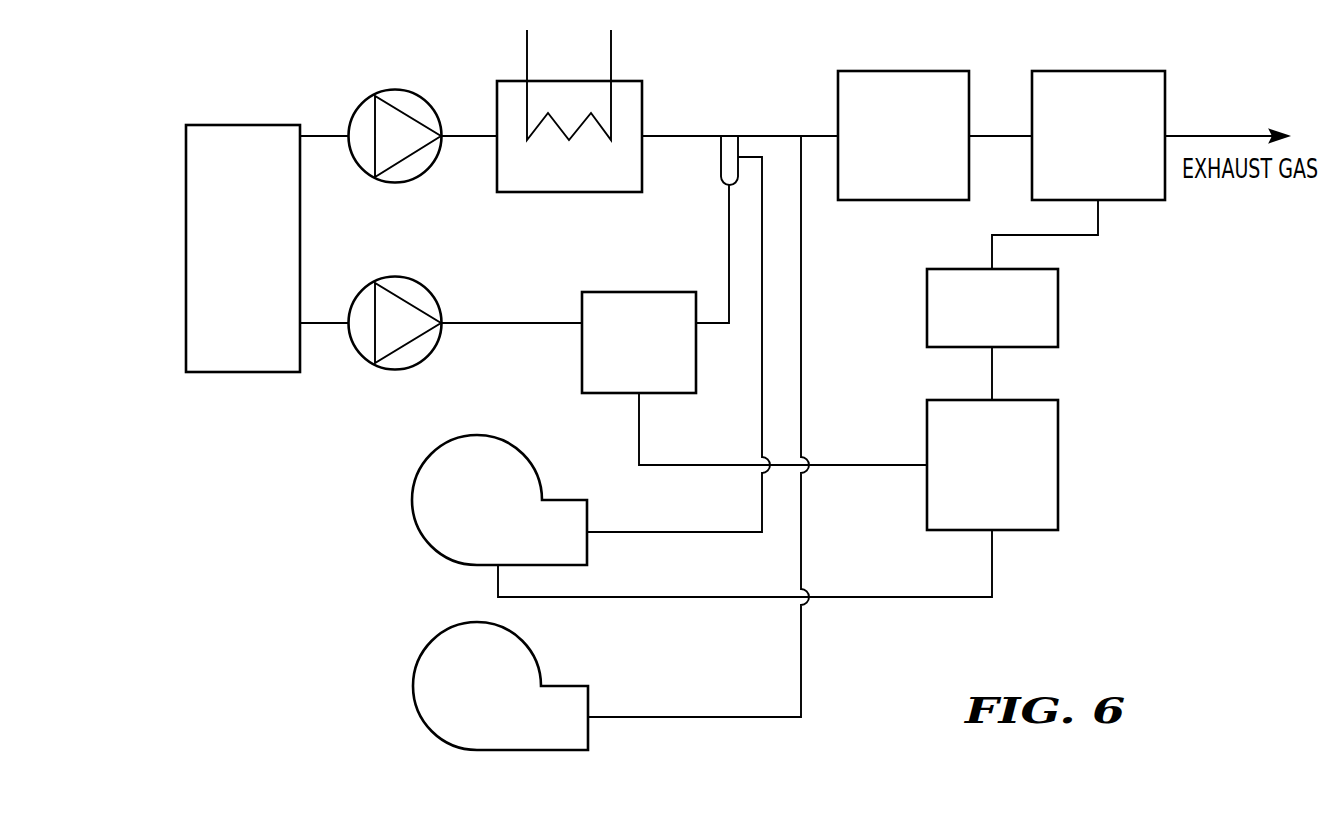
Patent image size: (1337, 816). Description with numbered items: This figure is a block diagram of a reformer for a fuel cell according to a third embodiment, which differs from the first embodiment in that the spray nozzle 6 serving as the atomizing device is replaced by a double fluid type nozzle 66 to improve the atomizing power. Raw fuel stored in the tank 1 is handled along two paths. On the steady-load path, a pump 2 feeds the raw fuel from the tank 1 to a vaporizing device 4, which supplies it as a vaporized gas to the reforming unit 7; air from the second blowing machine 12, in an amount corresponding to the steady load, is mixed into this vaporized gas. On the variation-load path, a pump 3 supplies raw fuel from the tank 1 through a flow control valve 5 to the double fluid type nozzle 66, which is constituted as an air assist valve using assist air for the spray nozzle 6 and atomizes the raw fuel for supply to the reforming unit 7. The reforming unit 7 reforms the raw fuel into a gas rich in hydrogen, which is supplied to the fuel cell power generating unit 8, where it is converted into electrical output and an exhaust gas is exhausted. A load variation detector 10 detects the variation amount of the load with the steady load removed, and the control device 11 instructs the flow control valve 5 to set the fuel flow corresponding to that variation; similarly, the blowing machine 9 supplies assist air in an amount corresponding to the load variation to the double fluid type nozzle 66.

The tank 1 is at (243, 248).
The pump 2 is at (399, 142).
The pump 3 is at (400, 329).
The vaporizing device 4 is at (569, 111).
The flow control valve 5 is at (639, 342).
The spray nozzle 6 is at (730, 124).
The double fluid type nozzle 66 is at (729, 161).
The reforming unit 7 is at (903, 135).
The fuel cell power generating unit 8 is at (1098, 135).
The blowing machine 9 is at (499, 500).
The load variation detector 10 is at (992, 308).
The control device 11 is at (992, 465).
The second blowing machine 12 is at (500, 686).